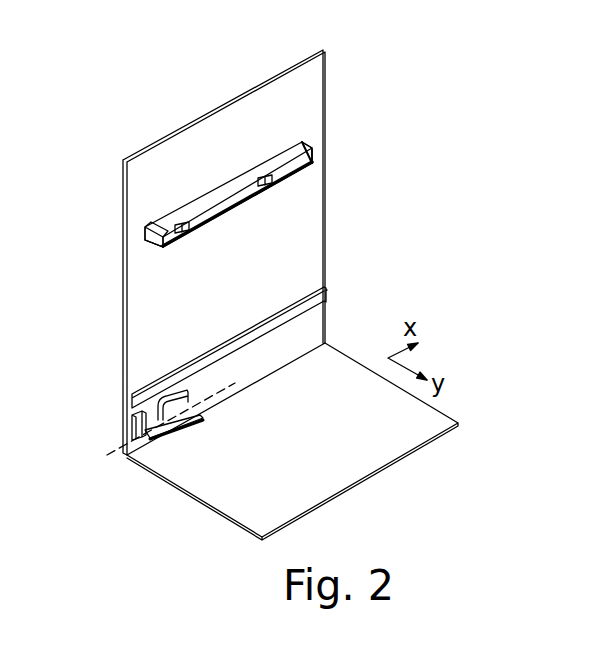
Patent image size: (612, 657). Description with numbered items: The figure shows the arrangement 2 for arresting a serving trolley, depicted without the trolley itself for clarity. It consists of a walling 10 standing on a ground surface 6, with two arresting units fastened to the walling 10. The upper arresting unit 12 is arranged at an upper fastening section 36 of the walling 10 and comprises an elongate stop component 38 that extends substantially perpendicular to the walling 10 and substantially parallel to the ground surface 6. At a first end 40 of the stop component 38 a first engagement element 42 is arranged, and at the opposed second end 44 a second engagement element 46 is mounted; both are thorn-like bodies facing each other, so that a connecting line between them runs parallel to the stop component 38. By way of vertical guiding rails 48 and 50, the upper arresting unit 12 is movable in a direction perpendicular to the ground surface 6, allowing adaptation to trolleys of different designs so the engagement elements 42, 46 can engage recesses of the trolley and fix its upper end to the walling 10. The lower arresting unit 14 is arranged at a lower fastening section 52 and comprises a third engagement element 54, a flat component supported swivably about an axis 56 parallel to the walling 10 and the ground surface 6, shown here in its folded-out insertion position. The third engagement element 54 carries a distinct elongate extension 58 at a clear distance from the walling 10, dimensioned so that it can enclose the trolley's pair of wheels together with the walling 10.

The arrangement 2 is at (353, 205).
The ground surface 6 is at (410, 423).
The walling 10 is at (307, 262).
The upper arresting unit 12 is at (256, 143).
The lower arresting unit 14 is at (273, 393).
The upper fastening section 36 is at (142, 242).
The elongate stop component 38 is at (206, 203).
The first end 40 is at (150, 226).
The first engagement element 42 is at (180, 251).
The second end 44 is at (292, 147).
The second engagement element 46 is at (310, 165).
The vertical guiding rail 48 is at (182, 234).
The vertical guiding rail 50 is at (263, 186).
The lower fastening section 52 is at (115, 433).
The third engagement element 54 is at (162, 433).
The axis 56 is at (234, 388).
The elongate extension 58 is at (208, 428).